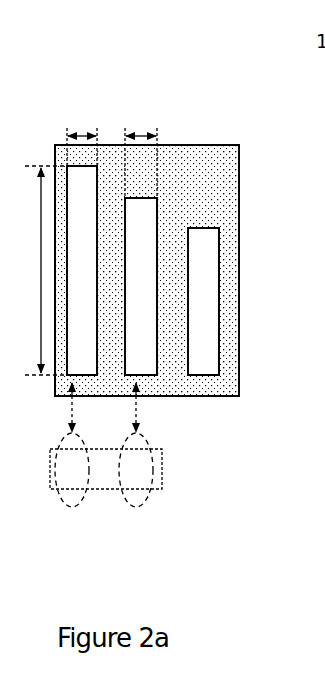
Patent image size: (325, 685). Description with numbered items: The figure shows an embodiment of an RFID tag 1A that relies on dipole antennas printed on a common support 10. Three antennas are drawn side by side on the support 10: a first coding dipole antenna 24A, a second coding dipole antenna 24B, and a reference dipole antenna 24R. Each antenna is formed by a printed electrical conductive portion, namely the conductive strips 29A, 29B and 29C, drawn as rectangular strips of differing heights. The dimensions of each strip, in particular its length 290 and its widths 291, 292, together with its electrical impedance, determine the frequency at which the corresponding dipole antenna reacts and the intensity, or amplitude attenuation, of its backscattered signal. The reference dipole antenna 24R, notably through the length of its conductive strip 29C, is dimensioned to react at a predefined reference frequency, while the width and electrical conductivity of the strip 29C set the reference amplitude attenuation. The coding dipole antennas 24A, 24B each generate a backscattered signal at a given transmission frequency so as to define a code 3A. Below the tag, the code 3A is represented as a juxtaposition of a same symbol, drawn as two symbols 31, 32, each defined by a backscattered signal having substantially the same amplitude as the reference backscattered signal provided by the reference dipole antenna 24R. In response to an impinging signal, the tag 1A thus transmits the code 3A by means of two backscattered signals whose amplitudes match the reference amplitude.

The RFID tag 1A is at (58, 78).
The support 10 is at (232, 238).
The dipole antenna 24A is at (107, 190).
The dipole antenna 24B is at (167, 217).
The reference dipole antenna 24R is at (209, 217).
The printed electrical conductive portion 29A is at (89, 295).
The printed electrical conductive portion 29B is at (138, 321).
The printed electrical conductive portion 29C is at (200, 357).
The length 290 is at (61, 270).
The width 291 is at (79, 128).
The width 292 is at (137, 128).
The code 3A is at (165, 470).
The symbol 31 is at (62, 493).
The symbol 32 is at (124, 493).